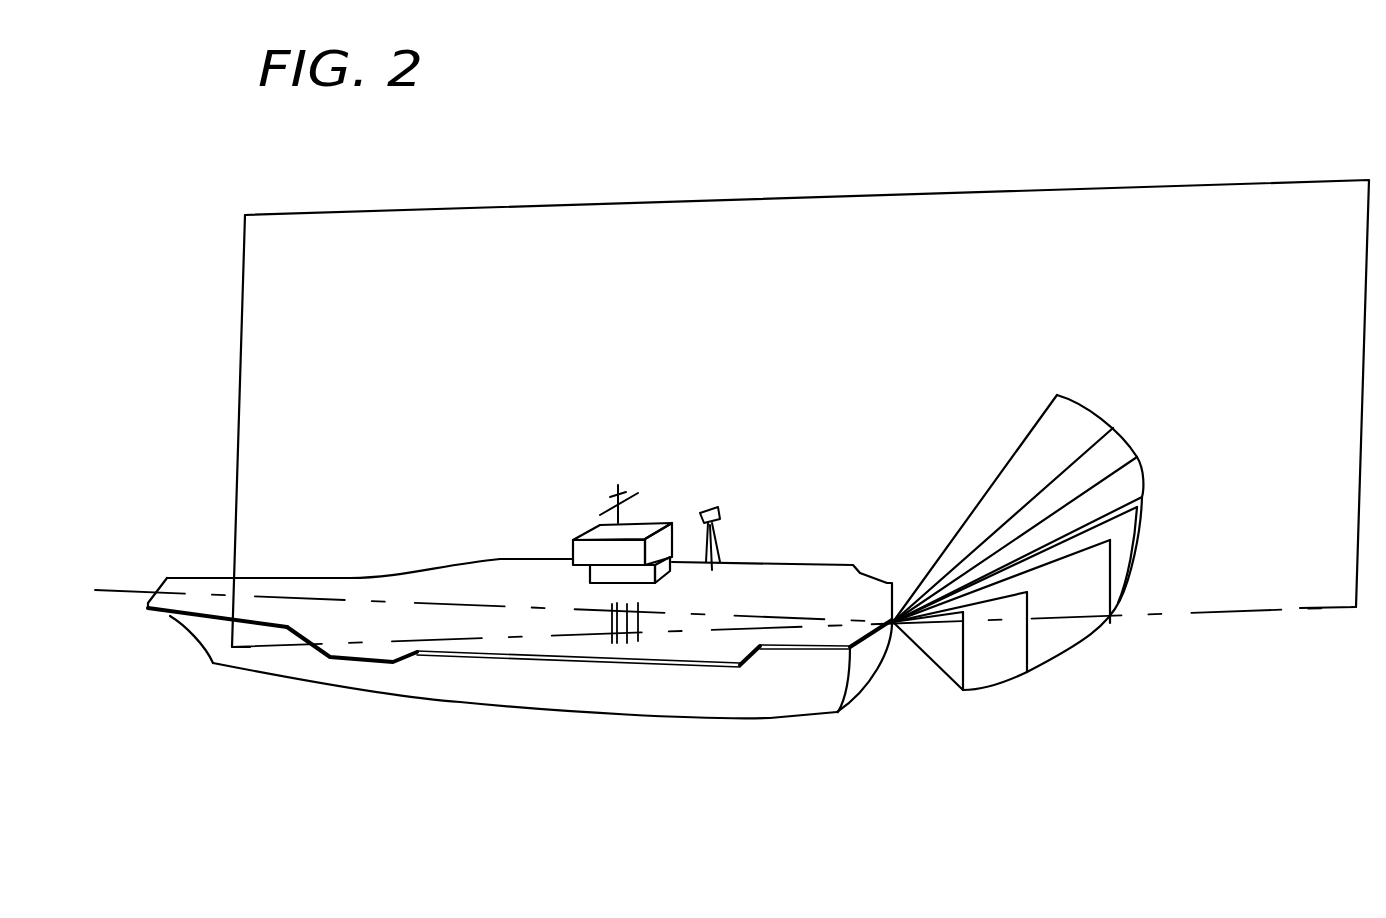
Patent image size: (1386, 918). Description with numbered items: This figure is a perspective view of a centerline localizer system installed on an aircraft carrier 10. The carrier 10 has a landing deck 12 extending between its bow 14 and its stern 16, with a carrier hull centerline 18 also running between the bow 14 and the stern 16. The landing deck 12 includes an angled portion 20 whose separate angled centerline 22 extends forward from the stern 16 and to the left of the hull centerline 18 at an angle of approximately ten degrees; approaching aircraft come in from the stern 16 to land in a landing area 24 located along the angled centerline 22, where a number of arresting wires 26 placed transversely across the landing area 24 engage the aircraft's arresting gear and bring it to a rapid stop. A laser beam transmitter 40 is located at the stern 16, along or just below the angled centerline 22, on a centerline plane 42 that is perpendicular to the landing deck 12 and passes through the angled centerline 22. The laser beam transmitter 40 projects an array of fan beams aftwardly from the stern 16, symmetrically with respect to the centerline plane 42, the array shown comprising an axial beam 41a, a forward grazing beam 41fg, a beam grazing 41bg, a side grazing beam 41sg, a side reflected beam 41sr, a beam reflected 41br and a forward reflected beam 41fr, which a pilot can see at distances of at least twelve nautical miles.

The carrier 10 is at (494, 625).
The landing deck 12 is at (357, 587).
The bow 14 is at (193, 643).
The stern 16 is at (862, 687).
The carrier hull centerline 18 is at (203, 593).
The angled portion 20 is at (358, 652).
The angled centerline 22 is at (248, 648).
The landing area 24 is at (603, 643).
The arresting wires 26 is at (613, 612).
The laser beam transmitter 40 is at (893, 633).
The forward grazing beam 41fg is at (1082, 403).
The beam grazing 41bg is at (1128, 437).
The side grazing beam 41sg is at (1143, 473).
The axial beam 41a is at (1143, 503).
The side reflected beam 41sr is at (1120, 597).
The beam reflected 41br is at (1063, 630).
The forward reflected beam 41fr is at (990, 658).
The centerline plane 42 is at (483, 205).